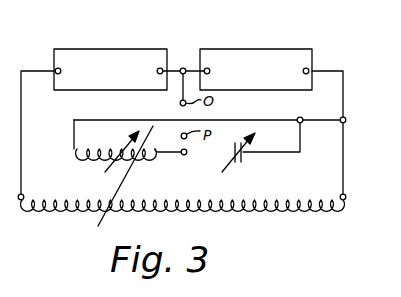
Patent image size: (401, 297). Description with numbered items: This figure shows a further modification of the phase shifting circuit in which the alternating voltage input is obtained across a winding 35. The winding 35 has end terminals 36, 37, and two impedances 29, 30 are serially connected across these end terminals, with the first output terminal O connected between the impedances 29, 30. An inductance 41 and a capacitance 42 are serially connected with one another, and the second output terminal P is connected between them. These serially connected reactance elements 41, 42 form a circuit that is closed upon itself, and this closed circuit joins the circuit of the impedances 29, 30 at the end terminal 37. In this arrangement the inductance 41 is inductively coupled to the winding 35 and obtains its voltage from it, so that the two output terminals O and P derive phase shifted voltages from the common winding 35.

The impedance 29 is at (93, 49).
The impedance 30 is at (304, 49).
The winding 35 is at (281, 212).
The end terminal 36 is at (24, 197).
The end terminal 37 is at (346, 197).
The inductance 41 is at (110, 147).
The capacitance 42 is at (244, 156).